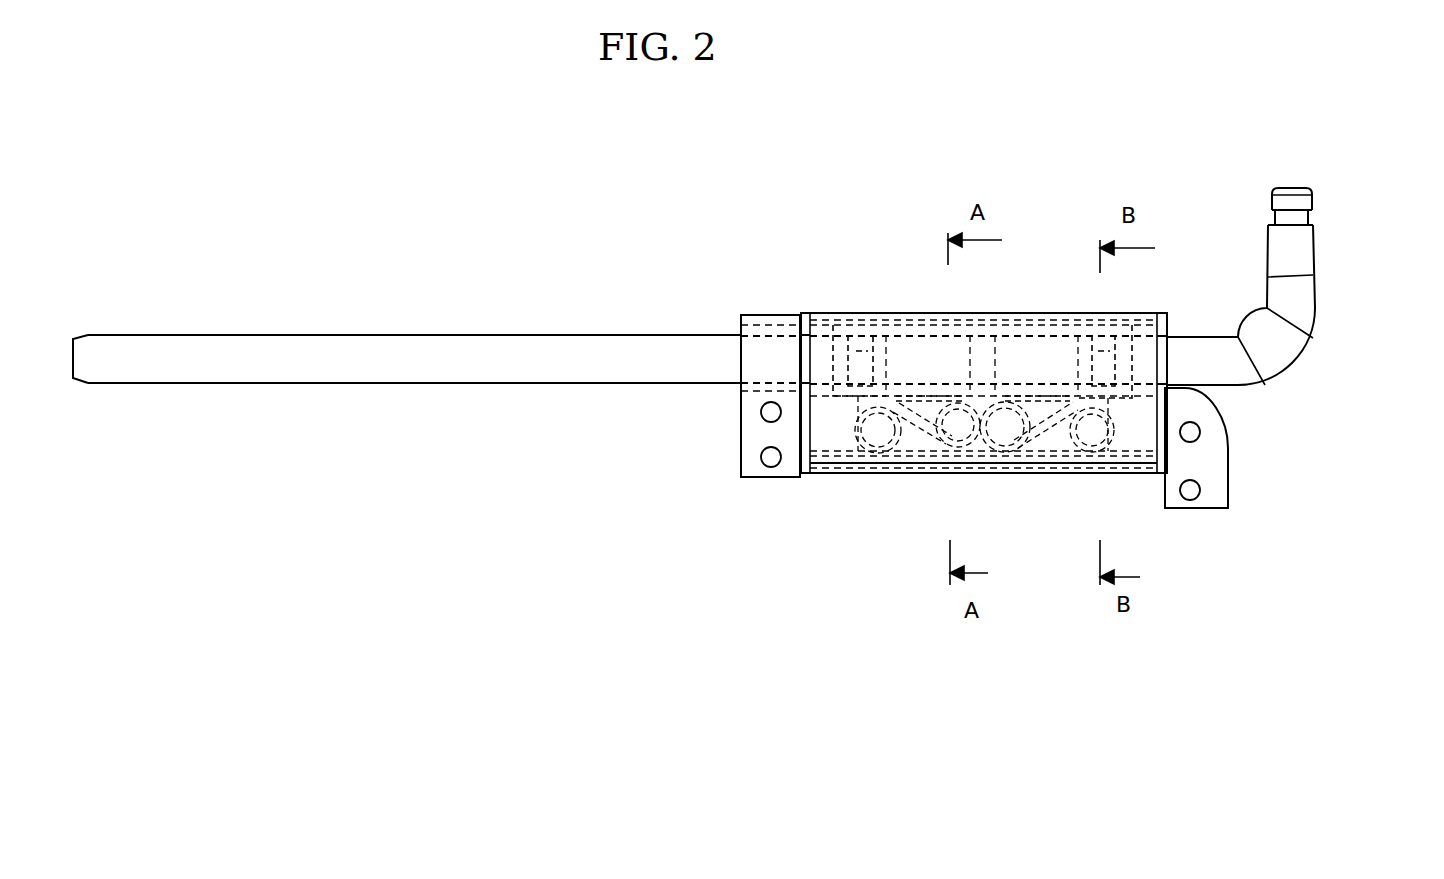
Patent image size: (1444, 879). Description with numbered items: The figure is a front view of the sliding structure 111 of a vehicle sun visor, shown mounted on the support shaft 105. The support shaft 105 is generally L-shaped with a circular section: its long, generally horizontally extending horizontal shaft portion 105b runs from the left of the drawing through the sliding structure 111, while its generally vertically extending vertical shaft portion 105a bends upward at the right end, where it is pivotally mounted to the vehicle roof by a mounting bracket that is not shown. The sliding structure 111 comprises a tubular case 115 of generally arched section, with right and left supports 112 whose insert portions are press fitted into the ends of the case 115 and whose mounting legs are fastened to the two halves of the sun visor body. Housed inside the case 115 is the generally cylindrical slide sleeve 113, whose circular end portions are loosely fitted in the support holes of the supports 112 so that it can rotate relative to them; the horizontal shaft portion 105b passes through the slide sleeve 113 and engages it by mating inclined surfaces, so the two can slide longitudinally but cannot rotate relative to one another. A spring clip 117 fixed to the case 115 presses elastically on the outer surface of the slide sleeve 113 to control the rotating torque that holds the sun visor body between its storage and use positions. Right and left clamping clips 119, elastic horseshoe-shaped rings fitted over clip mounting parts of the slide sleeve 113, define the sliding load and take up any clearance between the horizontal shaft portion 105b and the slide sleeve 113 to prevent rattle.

The support shaft 105 is at (1317, 237).
The vertical shaft portion 105a is at (1307, 303).
The horizontal shaft portion 105b is at (437, 335).
The sliding structure 111 is at (743, 478).
The right and left supports 112 is at (748, 315).
The slide sleeve 113 is at (919, 316).
The case 115 is at (845, 450).
The spring clip 117 is at (910, 434).
The right and left clamping clips 119 is at (858, 330).